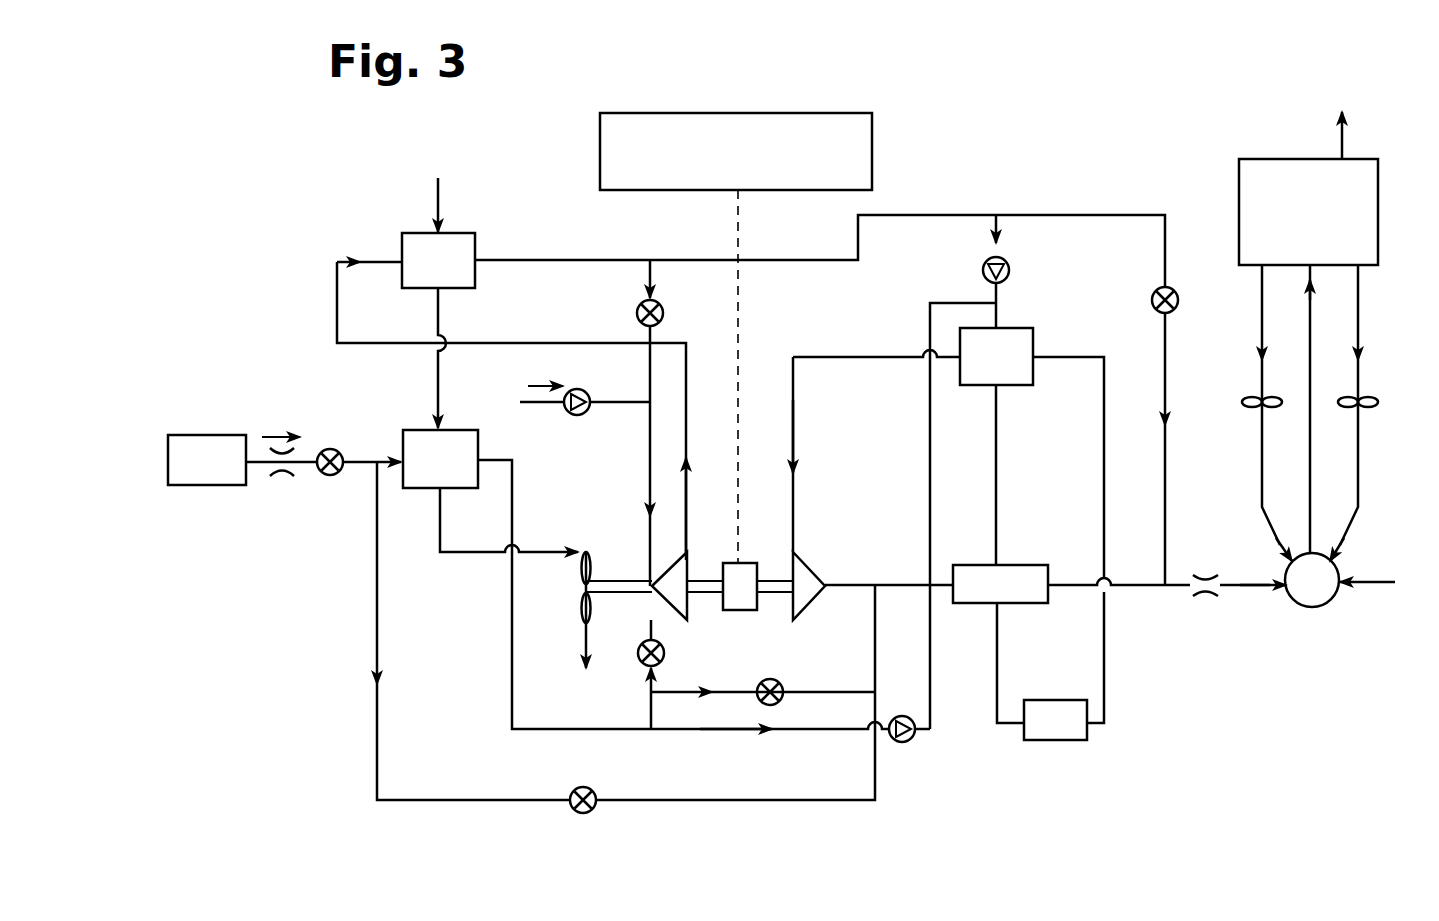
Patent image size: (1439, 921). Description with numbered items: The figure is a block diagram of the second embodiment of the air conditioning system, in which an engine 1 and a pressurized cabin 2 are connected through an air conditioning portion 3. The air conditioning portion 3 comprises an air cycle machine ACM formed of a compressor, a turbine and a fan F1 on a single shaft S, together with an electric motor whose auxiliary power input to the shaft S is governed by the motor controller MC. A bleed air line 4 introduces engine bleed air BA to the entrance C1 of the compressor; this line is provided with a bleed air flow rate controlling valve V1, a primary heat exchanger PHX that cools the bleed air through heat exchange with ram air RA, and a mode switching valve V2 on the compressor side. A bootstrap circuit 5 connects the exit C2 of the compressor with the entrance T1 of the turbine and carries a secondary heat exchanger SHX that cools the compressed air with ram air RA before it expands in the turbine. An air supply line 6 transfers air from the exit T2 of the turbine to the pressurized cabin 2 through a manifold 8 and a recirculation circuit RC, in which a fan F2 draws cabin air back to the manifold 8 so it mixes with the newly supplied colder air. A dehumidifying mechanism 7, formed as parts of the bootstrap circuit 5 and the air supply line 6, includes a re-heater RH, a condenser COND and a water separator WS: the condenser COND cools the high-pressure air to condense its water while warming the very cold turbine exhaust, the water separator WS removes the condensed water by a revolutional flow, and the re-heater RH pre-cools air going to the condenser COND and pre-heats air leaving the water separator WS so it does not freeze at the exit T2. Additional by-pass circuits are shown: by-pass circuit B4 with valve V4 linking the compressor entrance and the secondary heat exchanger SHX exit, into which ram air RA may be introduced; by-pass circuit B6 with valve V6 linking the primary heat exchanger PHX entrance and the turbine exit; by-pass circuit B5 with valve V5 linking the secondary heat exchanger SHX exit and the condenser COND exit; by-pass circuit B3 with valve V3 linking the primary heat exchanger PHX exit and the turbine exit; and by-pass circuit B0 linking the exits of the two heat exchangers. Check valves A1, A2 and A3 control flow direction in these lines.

The engine 1 is at (204, 433).
The pressurized cabin 2 is at (1292, 158).
The air conditioning portion 3 is at (961, 185).
The bleed air line 4 is at (361, 468).
The bootstrap circuit 5 is at (541, 254).
The air supply line 6 is at (1143, 592).
The dehumidifying mechanism 7 is at (849, 352).
The manifold 8 is at (1313, 608).
The bleed air flow rate controlling valve V1 is at (295, 481).
The mode switching valve V2 is at (638, 661).
The valve V3 is at (763, 706).
The valve V4 is at (665, 311).
The valve V5 is at (1152, 300).
The valve V6 is at (592, 813).
The check valve A1 is at (983, 270).
The check valve A2 is at (908, 742).
The check valve A3 is at (577, 417).
The by-pass circuit B0 is at (828, 733).
The by-pass circuit B3 is at (735, 688).
The by-pass circuit B4 is at (657, 266).
The by-pass circuit B5 is at (1126, 213).
The by-pass circuit B6 is at (738, 801).
The entrance of the compressor C1 is at (650, 584).
The exit of the compressor C2 is at (684, 558).
The entrance of the turbine T1 is at (795, 553).
The exit of the turbine T2 is at (829, 592).
The fan F1 is at (581, 608).
The fan F2 is at (1250, 396).
The shaft S is at (612, 597).
The air cycle machine ACM is at (735, 559).
The secondary heat exchanger SHX is at (400, 233).
The primary heat exchanger PHX is at (429, 433).
The motor controller MC is at (736, 338).
The re-heater RH is at (1020, 387).
The condenser COND is at (976, 605).
The water separator WS is at (1100, 750).
The ram air RA is at (432, 193).
The engine bleed air BA is at (278, 422).
The recirculation circuit RC is at (1360, 472).